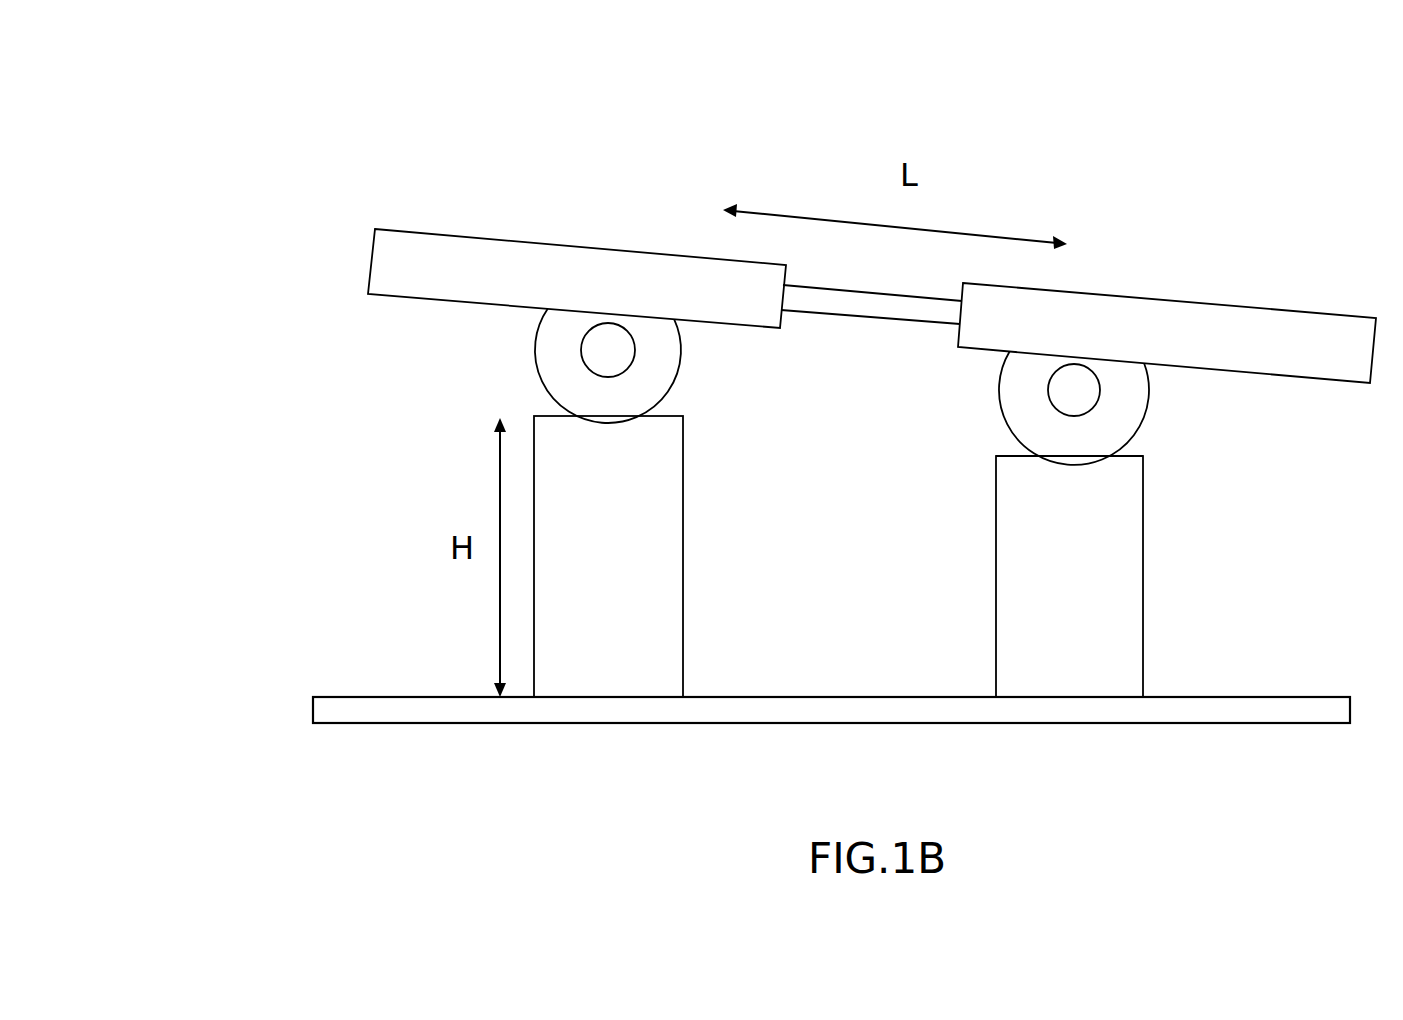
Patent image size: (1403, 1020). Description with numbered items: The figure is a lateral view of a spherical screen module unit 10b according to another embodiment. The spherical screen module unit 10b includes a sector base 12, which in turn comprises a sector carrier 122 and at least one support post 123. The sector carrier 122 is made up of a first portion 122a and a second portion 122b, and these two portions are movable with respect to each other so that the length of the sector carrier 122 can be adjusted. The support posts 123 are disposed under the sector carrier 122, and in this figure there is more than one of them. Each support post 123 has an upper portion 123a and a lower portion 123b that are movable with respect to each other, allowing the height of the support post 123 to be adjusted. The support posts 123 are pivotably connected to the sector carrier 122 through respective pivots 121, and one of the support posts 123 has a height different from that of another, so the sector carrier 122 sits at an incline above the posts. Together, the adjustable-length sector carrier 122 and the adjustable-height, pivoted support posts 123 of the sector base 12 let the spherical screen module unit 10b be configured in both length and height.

The spherical screen module unit 10b is at (295, 104).
The sector base 12 is at (1366, 572).
The pivot 121 is at (552, 357).
The sector carrier 122 is at (1245, 325).
The first portion 122a is at (1361, 345).
The second portion 122b is at (405, 252).
The support post 123 is at (635, 521).
The upper portion 123a is at (1002, 466).
The lower portion 123b is at (1006, 686).